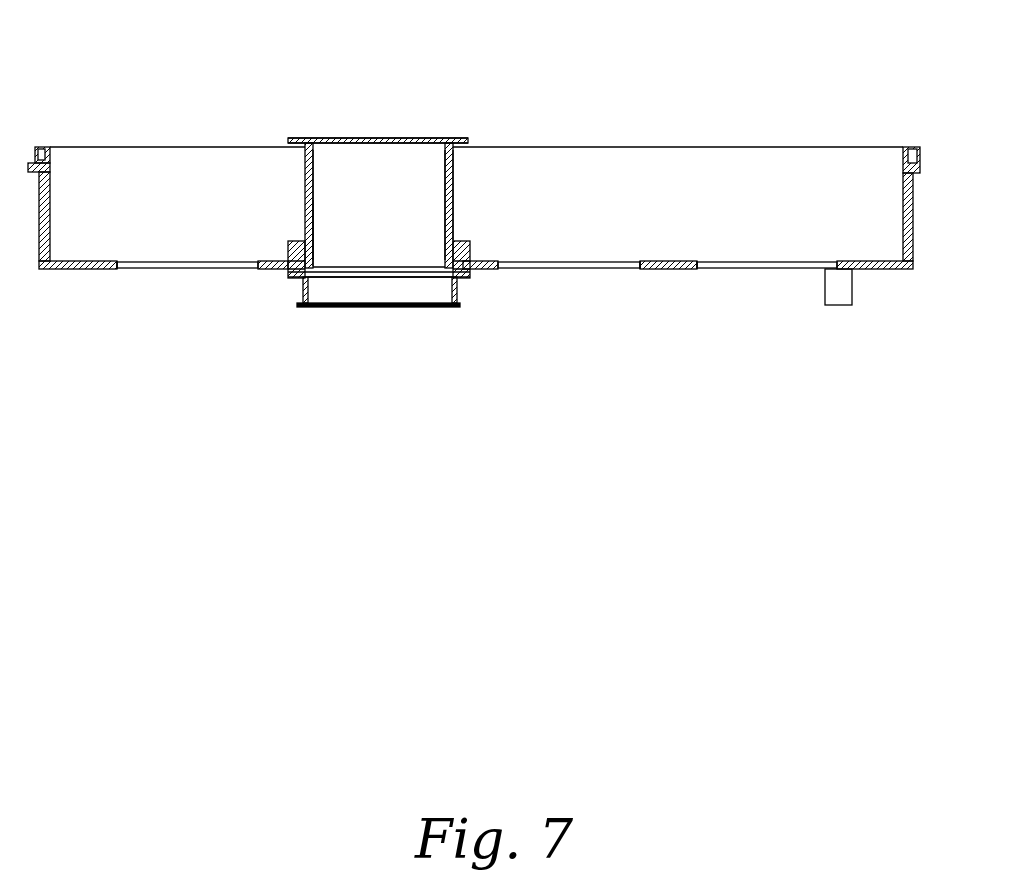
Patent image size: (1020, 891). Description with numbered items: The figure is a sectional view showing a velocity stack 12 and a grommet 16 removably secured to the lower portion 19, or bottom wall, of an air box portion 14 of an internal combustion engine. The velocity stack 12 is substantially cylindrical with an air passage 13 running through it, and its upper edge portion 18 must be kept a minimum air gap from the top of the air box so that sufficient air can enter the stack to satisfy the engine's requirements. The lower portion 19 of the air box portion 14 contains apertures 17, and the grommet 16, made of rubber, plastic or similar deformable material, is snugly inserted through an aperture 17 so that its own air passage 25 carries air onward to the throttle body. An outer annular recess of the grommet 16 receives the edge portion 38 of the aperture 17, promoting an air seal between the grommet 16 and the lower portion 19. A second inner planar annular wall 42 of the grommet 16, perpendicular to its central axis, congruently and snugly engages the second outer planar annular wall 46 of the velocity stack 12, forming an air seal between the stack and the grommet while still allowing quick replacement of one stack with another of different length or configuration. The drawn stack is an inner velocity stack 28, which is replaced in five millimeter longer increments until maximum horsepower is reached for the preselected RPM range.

The velocity stack 12 is at (338, 137).
The air passage 13 is at (378, 158).
The air box portion 14 is at (85, 268).
The grommet 16 is at (463, 247).
The aperture 17 is at (158, 265).
The edge portion 18 is at (457, 138).
The lower portion 19 is at (657, 262).
The air passage 25 is at (413, 293).
The inner velocity stack 28 is at (450, 197).
The edge portion 38 is at (117, 262).
The second inner planar annular wall 42 is at (340, 264).
The second outer planar annular wall 46 is at (372, 267).